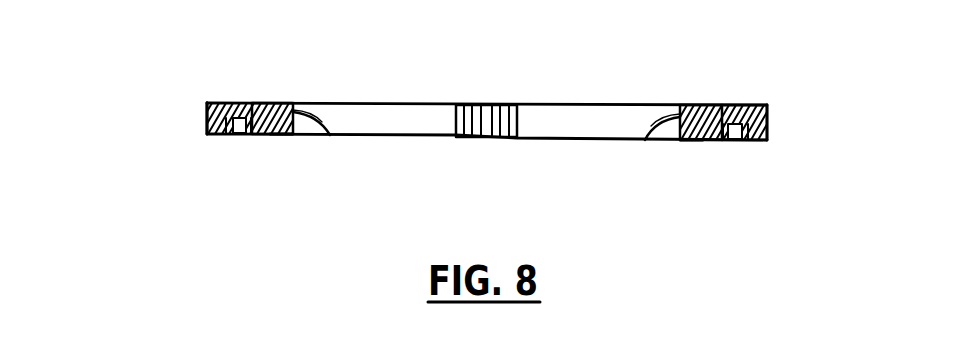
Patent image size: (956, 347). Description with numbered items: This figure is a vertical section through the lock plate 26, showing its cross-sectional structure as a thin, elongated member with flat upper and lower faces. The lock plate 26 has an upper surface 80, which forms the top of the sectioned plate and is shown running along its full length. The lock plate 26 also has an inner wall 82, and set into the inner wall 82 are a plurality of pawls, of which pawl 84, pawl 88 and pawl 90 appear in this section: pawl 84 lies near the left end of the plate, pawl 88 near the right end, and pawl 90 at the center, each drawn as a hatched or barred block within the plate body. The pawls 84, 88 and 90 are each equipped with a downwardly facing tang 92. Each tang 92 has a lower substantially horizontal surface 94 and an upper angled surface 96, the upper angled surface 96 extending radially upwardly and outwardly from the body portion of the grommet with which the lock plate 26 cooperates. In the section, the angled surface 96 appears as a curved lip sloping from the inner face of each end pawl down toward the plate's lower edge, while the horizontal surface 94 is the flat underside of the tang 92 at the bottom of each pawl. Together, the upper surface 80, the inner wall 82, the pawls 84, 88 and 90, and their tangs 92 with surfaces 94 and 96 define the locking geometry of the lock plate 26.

The lock plate 26 is at (188, 118).
The upper surface 80 is at (238, 102).
The inner wall 82 is at (540, 130).
The pawl 84 is at (298, 102).
The pawl 88 is at (670, 107).
The pawl 90 is at (485, 113).
The tang 92 is at (328, 137).
The lower substantially horizontal surface 94 is at (281, 136).
The upper angled surface 96 is at (310, 136).